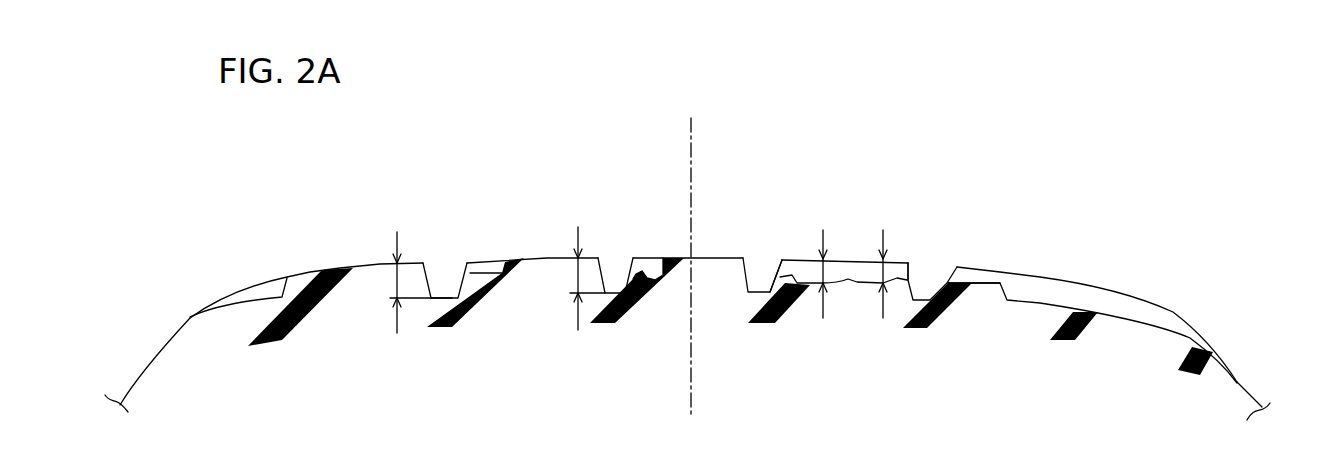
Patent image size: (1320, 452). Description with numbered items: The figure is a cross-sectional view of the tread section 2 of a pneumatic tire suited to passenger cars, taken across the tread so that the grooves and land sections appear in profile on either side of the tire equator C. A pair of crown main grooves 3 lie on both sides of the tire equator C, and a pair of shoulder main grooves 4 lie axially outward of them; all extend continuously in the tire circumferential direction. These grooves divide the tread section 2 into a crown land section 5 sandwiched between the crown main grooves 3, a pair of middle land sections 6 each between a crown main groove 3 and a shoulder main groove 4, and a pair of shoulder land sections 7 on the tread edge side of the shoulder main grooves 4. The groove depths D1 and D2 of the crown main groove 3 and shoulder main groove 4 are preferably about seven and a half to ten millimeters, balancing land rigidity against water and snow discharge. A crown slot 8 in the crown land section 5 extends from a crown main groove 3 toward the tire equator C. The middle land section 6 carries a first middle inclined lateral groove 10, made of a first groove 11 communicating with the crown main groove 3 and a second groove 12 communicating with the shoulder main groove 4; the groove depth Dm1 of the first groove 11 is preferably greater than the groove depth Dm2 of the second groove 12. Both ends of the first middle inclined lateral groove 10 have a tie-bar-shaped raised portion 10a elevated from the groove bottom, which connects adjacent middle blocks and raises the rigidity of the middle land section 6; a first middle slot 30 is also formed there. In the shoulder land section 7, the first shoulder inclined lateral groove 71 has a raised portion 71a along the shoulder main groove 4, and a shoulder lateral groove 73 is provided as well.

The tread section 2 is at (1193, 216).
The crown main groove 3 is at (615, 265).
The shoulder main groove 4 is at (447, 270).
The crown land section 5 is at (713, 256).
The middle land section 6 is at (547, 256).
The shoulder land section 7 is at (347, 266).
The crown slot 8 is at (652, 268).
The first middle inclined lateral groove 10 is at (848, 258).
The raised portion 10a is at (785, 263).
The first groove 11 is at (803, 268).
The second groove 12 is at (900, 278).
The first middle slot 30 is at (487, 268).
The first shoulder inclined lateral groove 71 is at (1040, 280).
The raised portion 71a is at (987, 283).
The shoulder lateral groove 73 is at (257, 292).
The tire equator C is at (693, 251).
The groove depth of crown main groove D1 is at (578, 276).
The groove depth of shoulder main groove D2 is at (395, 283).
The groove depth of first groove Dm1 is at (823, 292).
The groove depth of second groove Dm2 is at (881, 285).